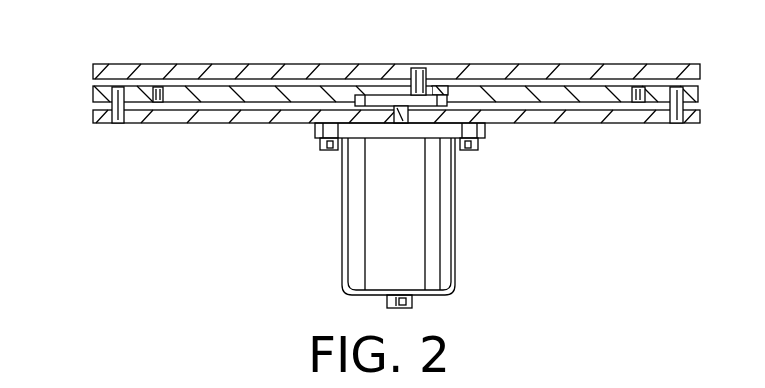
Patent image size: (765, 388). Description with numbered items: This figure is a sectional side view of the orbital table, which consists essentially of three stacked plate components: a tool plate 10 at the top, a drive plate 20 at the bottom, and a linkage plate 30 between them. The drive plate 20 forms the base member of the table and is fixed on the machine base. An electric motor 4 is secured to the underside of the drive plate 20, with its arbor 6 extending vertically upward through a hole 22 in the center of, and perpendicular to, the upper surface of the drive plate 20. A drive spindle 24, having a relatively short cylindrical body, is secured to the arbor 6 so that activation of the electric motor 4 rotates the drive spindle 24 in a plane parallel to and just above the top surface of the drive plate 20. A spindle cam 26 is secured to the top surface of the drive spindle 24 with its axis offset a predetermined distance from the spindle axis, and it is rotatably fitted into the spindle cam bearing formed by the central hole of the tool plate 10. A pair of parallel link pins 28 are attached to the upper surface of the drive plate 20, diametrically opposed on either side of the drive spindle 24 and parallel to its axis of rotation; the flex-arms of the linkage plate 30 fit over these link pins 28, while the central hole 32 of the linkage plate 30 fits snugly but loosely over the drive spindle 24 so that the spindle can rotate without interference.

The tool plate 10 is at (193, 73).
The drive plate 20 is at (200, 123).
The linkage plate 30 is at (97, 92).
The link pins 28 is at (118, 125).
The drive spindle 24 is at (385, 97).
The spindle cam 26 is at (423, 72).
The hole 32 is at (442, 88).
The hole 22 is at (388, 116).
The arbor 6 is at (398, 128).
The electric motor 4 is at (433, 238).